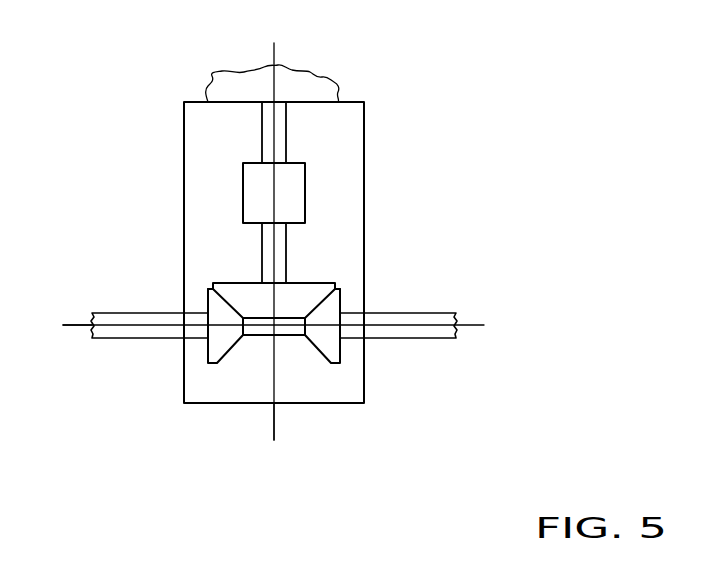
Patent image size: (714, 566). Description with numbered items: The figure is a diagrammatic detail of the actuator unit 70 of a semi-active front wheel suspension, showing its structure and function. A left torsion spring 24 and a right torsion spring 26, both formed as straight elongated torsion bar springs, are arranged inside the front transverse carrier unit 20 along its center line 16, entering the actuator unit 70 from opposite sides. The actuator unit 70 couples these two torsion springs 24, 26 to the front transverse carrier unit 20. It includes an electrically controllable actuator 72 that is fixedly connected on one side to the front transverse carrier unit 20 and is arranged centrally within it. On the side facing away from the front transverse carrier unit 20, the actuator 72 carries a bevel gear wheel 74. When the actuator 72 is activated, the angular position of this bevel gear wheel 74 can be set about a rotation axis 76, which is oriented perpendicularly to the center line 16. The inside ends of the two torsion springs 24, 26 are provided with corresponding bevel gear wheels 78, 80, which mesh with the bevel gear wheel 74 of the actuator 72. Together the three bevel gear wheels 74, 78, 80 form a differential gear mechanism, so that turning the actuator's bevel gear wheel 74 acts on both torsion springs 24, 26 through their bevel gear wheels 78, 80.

The center line 16 is at (70, 325).
The front transverse carrier unit 20 is at (300, 86).
The left torsion spring 24 is at (142, 318).
The right torsion spring 26 is at (410, 320).
The actuator unit 70 is at (183, 143).
The actuator 72 is at (293, 193).
The bevel gear wheel 74 is at (286, 303).
The rotation axis 76 is at (273, 418).
The bevel gear wheel 78 is at (215, 347).
The bevel gear wheel 80 is at (330, 340).